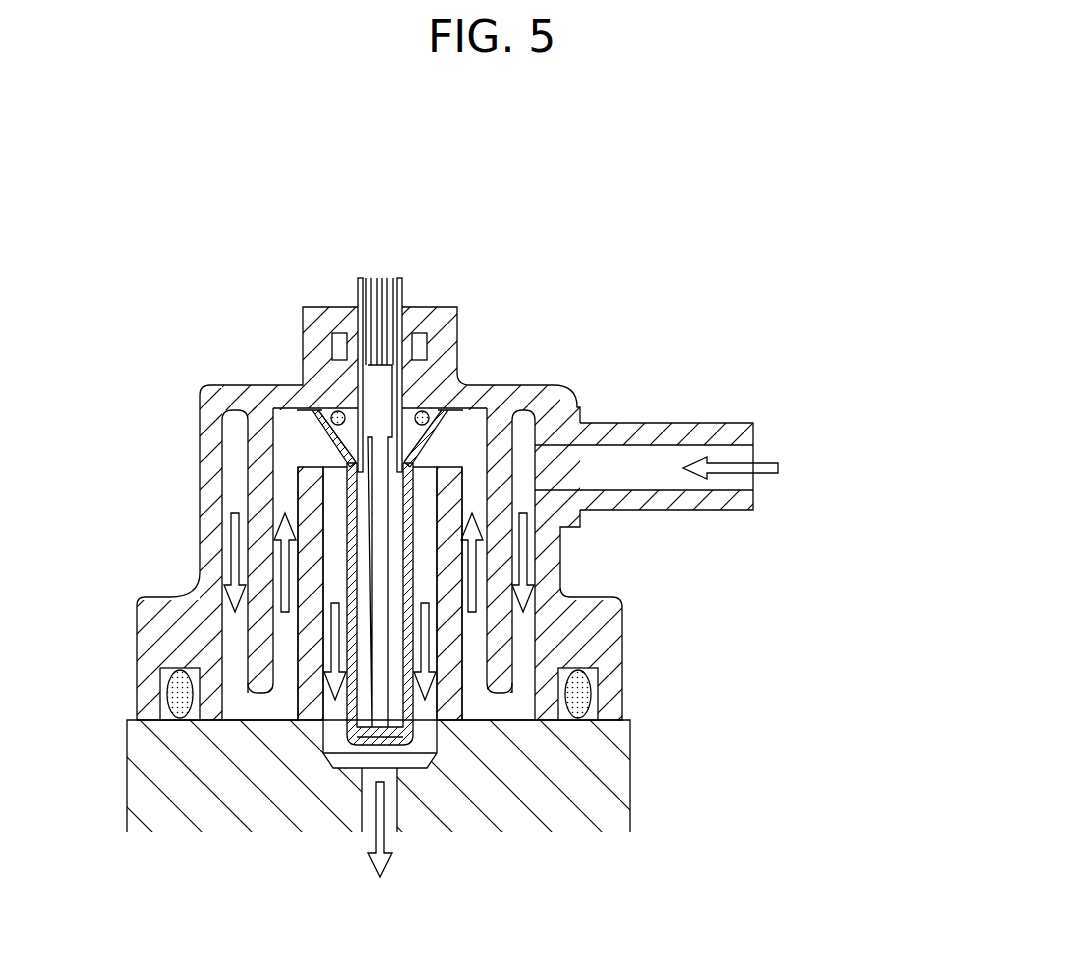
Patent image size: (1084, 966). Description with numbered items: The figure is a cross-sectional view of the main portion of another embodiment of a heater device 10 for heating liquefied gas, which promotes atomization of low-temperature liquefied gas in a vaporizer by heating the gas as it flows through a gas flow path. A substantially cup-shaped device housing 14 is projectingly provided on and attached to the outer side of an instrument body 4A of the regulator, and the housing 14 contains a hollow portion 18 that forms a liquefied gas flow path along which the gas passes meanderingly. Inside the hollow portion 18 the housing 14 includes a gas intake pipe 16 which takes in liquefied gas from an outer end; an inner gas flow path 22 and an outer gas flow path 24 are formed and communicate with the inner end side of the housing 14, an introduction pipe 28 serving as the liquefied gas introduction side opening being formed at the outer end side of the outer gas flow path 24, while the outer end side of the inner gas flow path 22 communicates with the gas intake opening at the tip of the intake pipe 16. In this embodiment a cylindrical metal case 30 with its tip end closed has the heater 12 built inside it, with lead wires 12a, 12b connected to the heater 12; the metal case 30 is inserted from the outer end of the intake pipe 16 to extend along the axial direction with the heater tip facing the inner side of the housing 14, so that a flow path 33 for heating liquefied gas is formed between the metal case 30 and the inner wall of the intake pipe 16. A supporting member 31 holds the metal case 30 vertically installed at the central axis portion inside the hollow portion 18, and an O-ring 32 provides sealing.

The heater device 10 is at (597, 242).
The instrument body 4A is at (610, 782).
The heater 12 is at (356, 576).
The lead wire 12a is at (358, 286).
The lead wire 12b is at (402, 286).
The device housing 14 is at (610, 688).
The gas intake pipe 16 is at (308, 486).
The hollow portion 18 is at (529, 563).
The inner gas flow path 22 is at (472, 638).
The outer gas flow path 24 is at (520, 638).
The introduction pipe 28 is at (672, 432).
The metal case 30 is at (405, 737).
The supporting member 31 is at (455, 414).
The O-ring 32 is at (440, 403).
The flow path 33 is at (333, 570).